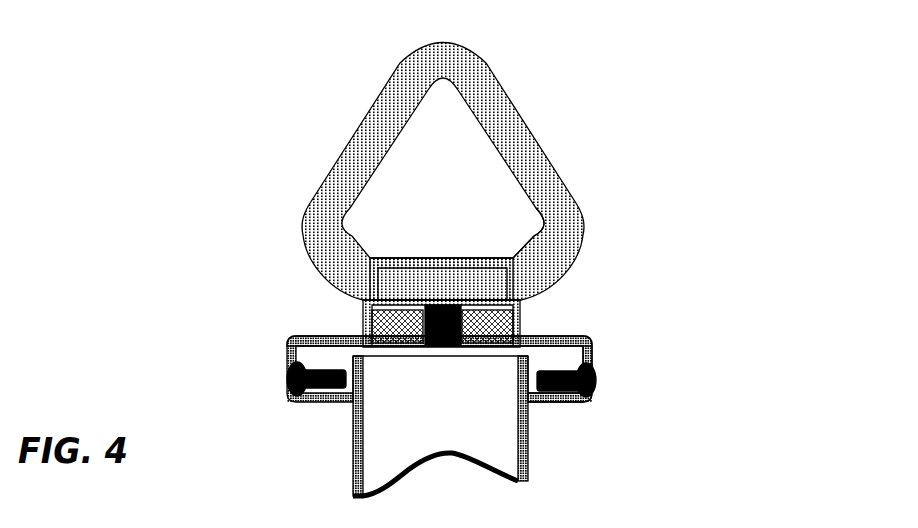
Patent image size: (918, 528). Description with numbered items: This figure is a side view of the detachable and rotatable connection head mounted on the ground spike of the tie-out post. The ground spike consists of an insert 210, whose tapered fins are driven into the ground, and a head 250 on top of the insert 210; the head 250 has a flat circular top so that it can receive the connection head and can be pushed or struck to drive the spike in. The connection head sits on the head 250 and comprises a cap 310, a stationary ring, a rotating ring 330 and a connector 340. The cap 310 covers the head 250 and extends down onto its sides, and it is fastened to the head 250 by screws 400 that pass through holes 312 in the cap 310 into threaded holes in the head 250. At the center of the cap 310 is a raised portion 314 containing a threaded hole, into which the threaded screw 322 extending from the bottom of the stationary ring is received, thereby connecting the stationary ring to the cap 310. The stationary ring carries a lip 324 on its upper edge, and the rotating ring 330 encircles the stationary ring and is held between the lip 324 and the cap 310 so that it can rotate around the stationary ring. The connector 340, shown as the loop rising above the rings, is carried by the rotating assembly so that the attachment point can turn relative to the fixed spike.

The insert 210 is at (507, 451).
The head 250 is at (343, 395).
The cap 310 is at (307, 330).
The holes 312 is at (587, 352).
The raised portion 314 is at (367, 305).
The threaded screw 322 is at (520, 318).
The lip 324 is at (508, 262).
The rotating ring 330 is at (388, 287).
The connector 340 is at (522, 152).
The screws 400 is at (592, 378).